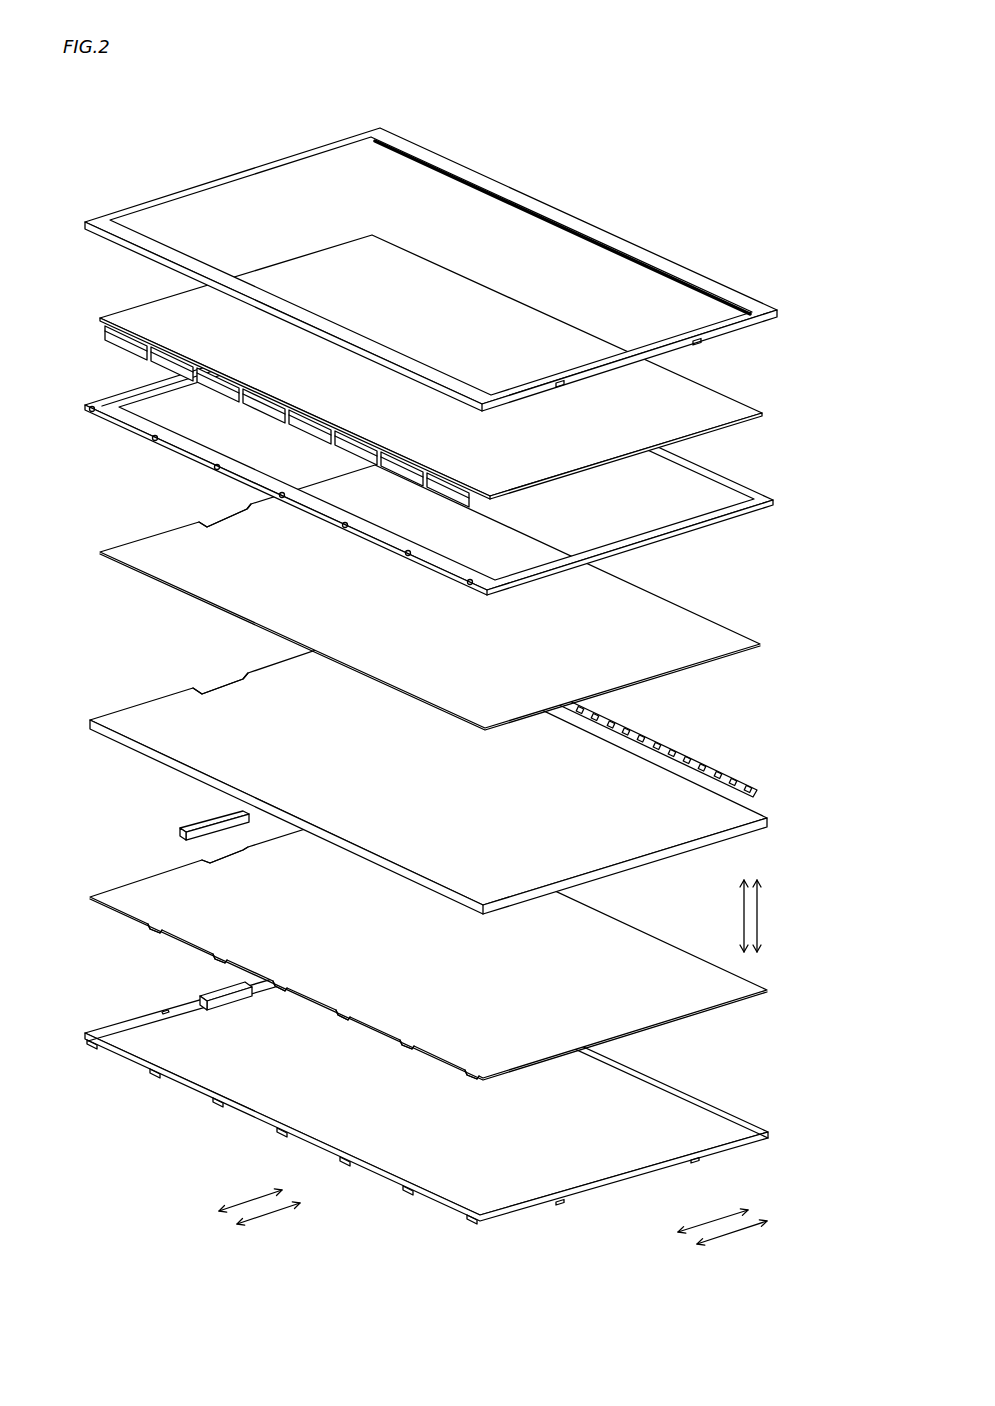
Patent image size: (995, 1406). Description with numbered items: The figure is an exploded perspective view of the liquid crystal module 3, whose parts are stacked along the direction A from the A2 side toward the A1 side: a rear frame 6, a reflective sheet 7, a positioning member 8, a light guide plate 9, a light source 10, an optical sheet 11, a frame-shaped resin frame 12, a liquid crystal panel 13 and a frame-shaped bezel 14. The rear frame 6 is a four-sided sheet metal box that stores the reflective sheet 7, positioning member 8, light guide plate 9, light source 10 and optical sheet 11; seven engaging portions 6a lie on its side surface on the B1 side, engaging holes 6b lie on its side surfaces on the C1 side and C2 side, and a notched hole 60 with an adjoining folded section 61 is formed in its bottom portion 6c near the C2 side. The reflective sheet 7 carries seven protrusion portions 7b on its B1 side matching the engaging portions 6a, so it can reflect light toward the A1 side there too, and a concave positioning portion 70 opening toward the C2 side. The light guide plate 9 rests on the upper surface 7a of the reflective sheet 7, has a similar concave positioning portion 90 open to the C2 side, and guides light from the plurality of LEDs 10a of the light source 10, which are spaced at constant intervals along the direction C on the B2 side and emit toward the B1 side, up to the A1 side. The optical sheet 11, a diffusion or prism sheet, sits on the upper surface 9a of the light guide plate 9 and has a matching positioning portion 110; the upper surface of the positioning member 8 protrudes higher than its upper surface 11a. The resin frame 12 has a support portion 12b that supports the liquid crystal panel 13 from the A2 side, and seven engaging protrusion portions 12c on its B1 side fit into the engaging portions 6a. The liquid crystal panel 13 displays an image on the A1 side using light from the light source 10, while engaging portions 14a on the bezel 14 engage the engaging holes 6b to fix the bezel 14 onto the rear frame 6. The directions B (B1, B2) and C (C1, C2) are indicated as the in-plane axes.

The liquid crystal module 3 is at (669, 163).
The bezel 14 is at (403, 285).
The engaging portions 14a is at (561, 385).
The liquid crystal panel 13 is at (99, 319).
The resin frame 12 is at (401, 466).
The support portion 12b is at (173, 378).
The engaging protrusion portions 12c is at (89, 411).
The optical sheet 11 is at (395, 597).
The upper surface of the optical sheet 11a is at (175, 547).
The positioning portion 110 is at (226, 520).
The light guide plate 9 is at (403, 772).
The upper surface of the light guide plate 9a is at (175, 708).
The positioning portion 90 is at (225, 688).
The light source 10 is at (673, 753).
The LEDs 10a is at (650, 732).
The positioning member 8 is at (180, 834).
The reflective sheet 7 is at (402, 955).
The upper surface of the reflective sheet 7a is at (628, 940).
The protrusion portions 7b is at (94, 903).
The positioning portion 70 is at (205, 860).
The rear frame 6 is at (404, 1102).
The engaging portions 6a is at (92, 1044).
The engaging holes 6b is at (160, 1012).
The bottom portion 6c is at (627, 1092).
The notched hole 60 is at (195, 1000).
The folded section 61 is at (221, 999).
The direction A is at (737, 916).
The A1 side A1 is at (770, 916).
The A2 side A2 is at (770, 936).
The direction B is at (713, 1217).
The B1 side B1 is at (732, 1240).
The B2 side B2 is at (762, 1233).
The direction C is at (250, 1194).
The C1 side C1 is at (268, 1221).
The C2 side C2 is at (229, 1214).